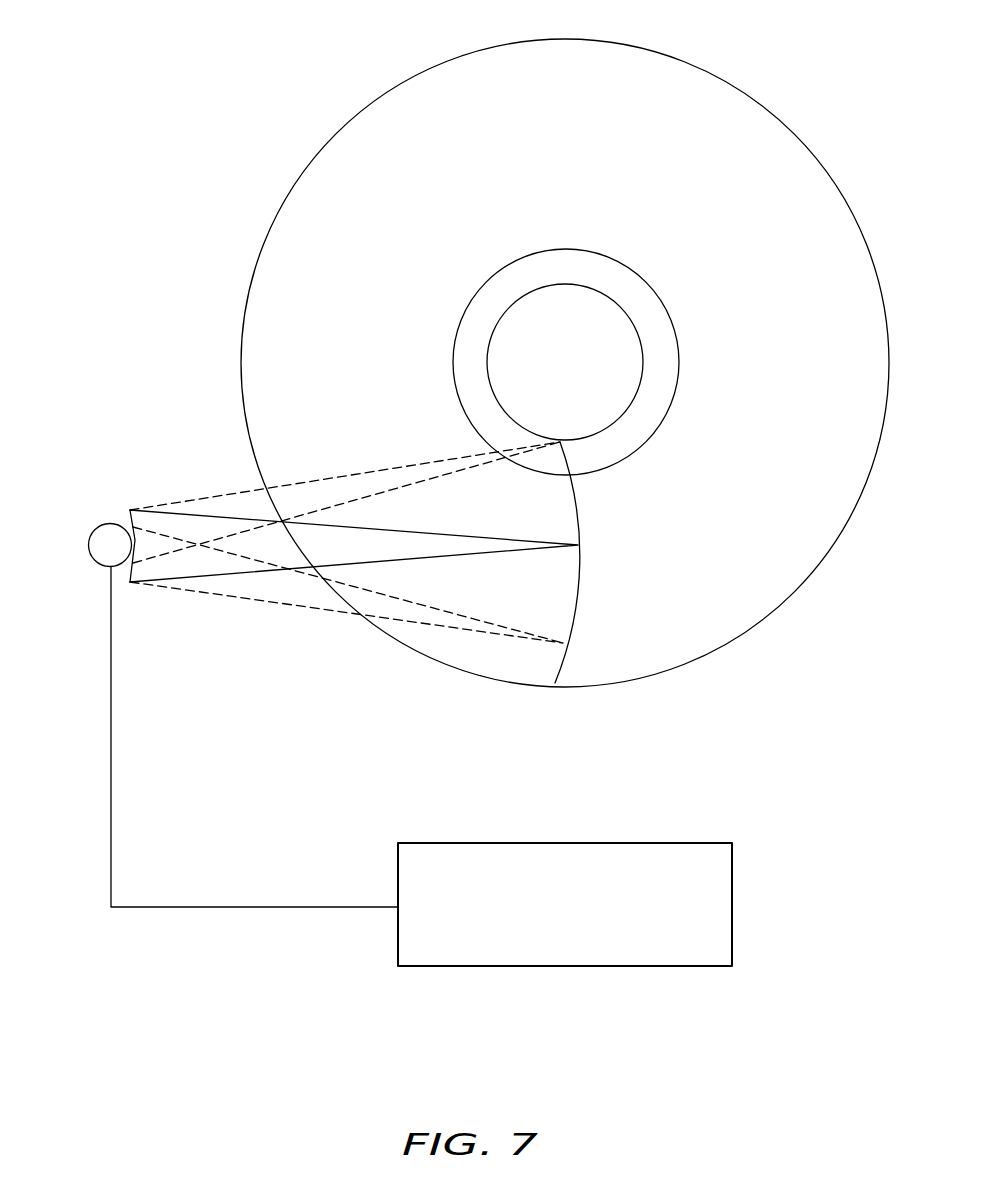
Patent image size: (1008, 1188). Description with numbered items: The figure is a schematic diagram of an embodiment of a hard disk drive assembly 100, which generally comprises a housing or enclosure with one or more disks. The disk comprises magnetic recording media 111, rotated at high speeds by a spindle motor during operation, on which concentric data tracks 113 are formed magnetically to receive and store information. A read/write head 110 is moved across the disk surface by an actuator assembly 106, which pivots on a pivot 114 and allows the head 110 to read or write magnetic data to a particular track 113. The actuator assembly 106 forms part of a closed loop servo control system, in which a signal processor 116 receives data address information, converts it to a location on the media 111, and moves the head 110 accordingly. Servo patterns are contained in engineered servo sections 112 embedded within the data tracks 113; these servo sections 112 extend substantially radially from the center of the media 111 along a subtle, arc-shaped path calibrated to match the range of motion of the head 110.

The hard disk drive assembly 100 is at (188, 139).
The actuator assembly 106 is at (198, 492).
The read/write head 110 is at (511, 555).
The magnetic recording media 111 is at (586, 176).
The servo sections 112 is at (580, 545).
The data tracks 113 is at (679, 358).
The pivot 114 is at (92, 560).
The signal processor 116 is at (587, 918).